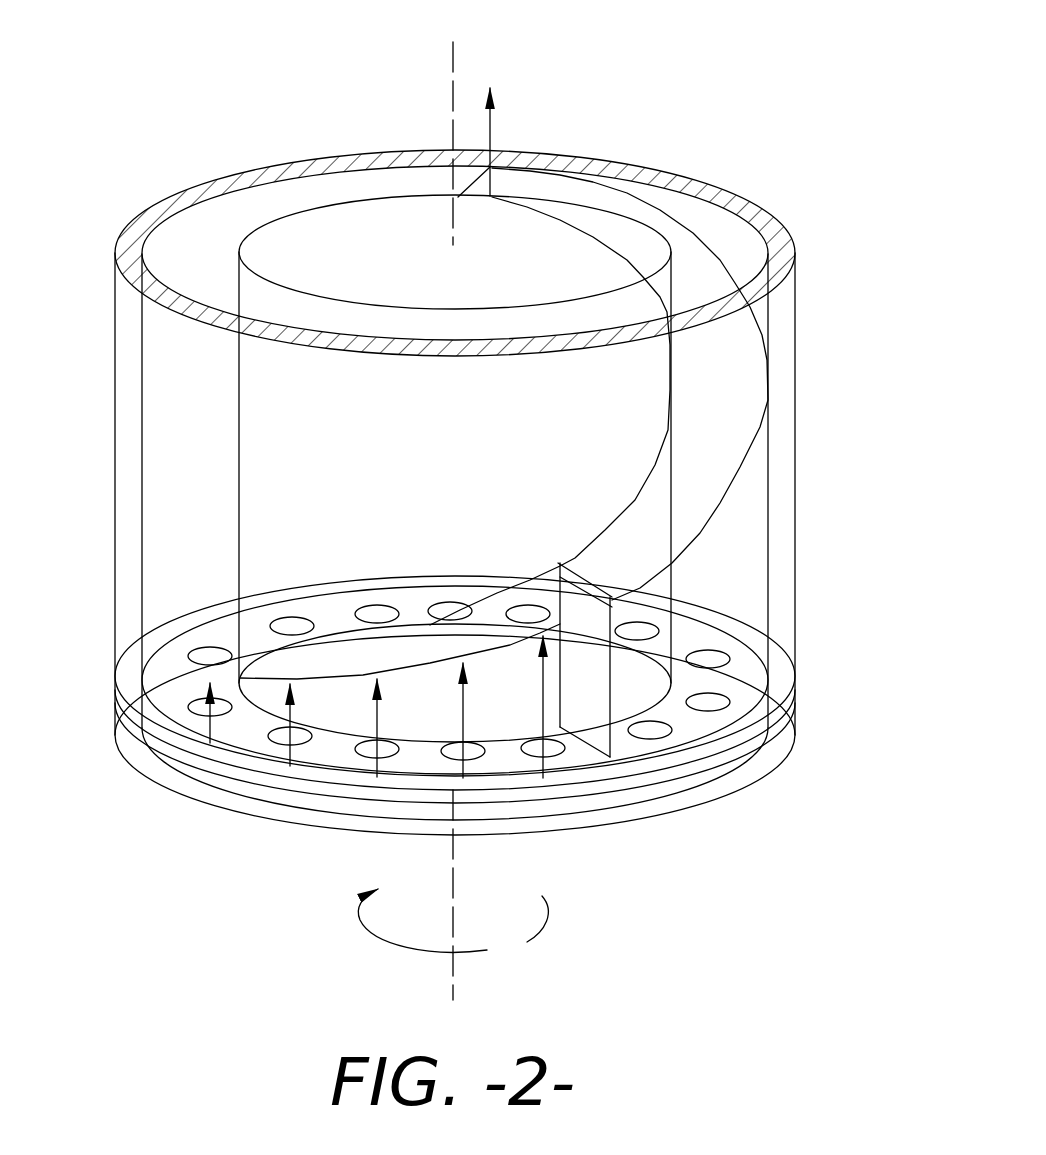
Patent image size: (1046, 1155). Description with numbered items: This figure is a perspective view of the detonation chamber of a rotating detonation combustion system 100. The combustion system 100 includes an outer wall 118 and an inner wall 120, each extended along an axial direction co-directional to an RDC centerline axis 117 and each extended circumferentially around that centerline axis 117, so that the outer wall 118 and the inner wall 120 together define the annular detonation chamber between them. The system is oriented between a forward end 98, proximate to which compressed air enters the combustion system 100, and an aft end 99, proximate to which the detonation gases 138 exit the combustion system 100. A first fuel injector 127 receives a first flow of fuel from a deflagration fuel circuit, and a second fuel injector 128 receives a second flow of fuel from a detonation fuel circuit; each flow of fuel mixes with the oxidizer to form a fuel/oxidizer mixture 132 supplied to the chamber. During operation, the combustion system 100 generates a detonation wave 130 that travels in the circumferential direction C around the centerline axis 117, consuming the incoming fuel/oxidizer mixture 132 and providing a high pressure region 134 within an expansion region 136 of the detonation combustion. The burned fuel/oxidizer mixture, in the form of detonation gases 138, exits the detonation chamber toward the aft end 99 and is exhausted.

The combustion system 100 is at (629, 76).
The RDC centerline axis 117 is at (453, 106).
The outer wall 118 is at (138, 220).
The inner wall 120 is at (238, 510).
The first fuel injector 127 is at (707, 714).
The second fuel injector 128 is at (733, 703).
The detonation wave 130 is at (648, 746).
The fuel/oxidizer mixture 132 is at (466, 722).
The high pressure region 134 is at (741, 684).
The expansion region 136 is at (732, 410).
The detonation gases 138 is at (491, 135).
The aft end 99 is at (335, 112).
The forward end 98 is at (335, 899).
The circumferential direction C is at (453, 928).